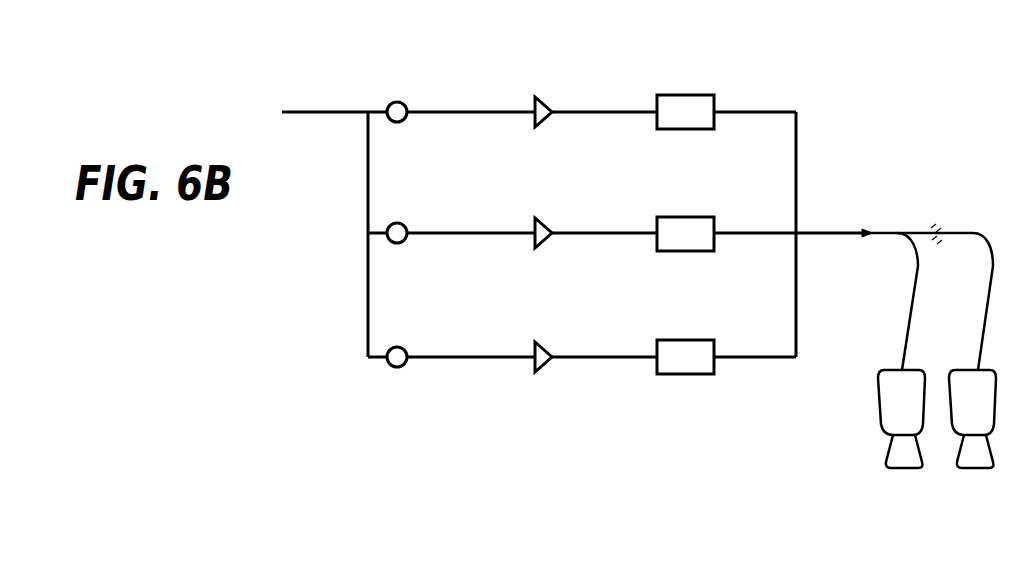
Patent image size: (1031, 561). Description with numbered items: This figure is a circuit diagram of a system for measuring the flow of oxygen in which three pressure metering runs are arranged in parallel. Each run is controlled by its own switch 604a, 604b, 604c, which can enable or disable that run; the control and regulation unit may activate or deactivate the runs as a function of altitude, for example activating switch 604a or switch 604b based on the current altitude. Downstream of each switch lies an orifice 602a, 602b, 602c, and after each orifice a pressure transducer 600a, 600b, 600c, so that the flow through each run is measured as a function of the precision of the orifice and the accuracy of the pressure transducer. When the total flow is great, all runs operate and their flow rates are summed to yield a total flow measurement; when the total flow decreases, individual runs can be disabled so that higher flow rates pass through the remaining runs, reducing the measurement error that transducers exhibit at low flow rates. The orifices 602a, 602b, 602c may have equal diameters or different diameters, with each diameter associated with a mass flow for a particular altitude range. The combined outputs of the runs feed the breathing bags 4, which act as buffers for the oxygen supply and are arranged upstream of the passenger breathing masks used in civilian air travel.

The switch 604a is at (395, 101).
The switch 604b is at (400, 222).
The switch 604c is at (398, 346).
The orifice 602a is at (537, 97).
The orifice 602b is at (537, 218).
The orifice 602c is at (537, 342).
The pressure transducer 600a is at (688, 95).
The pressure transducer 600b is at (688, 217).
The pressure transducer 600c is at (678, 340).
The breathing bag 4 is at (893, 416).